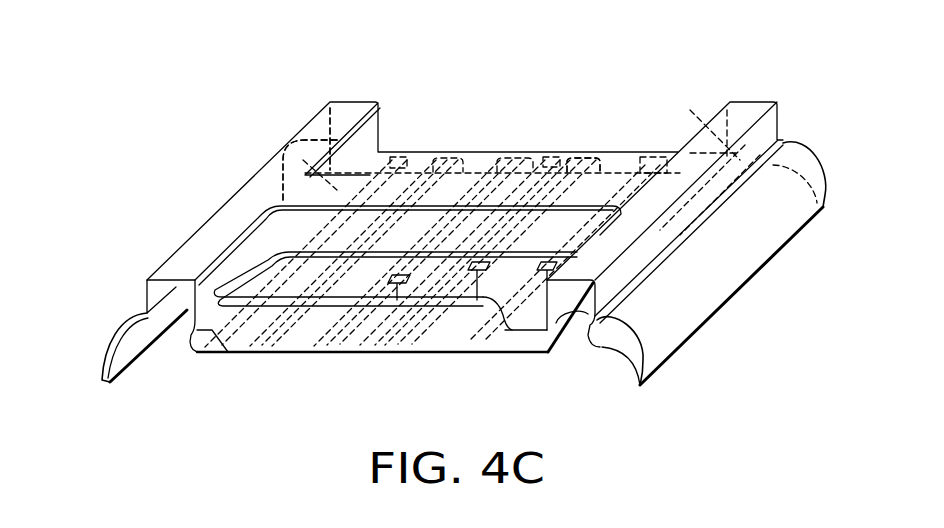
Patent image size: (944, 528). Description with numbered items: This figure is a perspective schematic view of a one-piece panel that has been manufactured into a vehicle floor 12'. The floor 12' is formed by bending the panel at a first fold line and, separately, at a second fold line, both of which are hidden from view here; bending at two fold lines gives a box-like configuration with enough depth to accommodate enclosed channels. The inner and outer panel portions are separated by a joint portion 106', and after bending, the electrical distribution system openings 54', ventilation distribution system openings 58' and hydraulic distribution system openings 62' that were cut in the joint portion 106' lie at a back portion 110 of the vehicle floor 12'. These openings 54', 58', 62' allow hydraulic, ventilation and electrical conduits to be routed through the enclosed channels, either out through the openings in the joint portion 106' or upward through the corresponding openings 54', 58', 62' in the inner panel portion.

The vehicle floor 12' is at (463, 243).
The electrical distribution system openings 54' is at (602, 234).
The ventilation distribution system openings 58' is at (491, 234).
The hydraulic distribution system openings 62' is at (397, 234).
The joint portion 106' is at (590, 116).
The back portion 110 is at (372, 160).